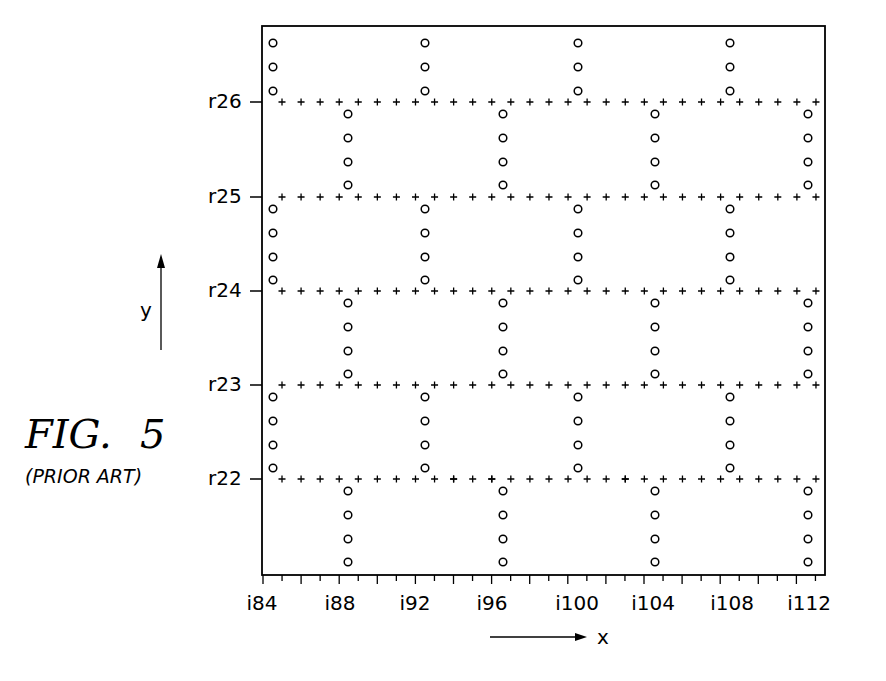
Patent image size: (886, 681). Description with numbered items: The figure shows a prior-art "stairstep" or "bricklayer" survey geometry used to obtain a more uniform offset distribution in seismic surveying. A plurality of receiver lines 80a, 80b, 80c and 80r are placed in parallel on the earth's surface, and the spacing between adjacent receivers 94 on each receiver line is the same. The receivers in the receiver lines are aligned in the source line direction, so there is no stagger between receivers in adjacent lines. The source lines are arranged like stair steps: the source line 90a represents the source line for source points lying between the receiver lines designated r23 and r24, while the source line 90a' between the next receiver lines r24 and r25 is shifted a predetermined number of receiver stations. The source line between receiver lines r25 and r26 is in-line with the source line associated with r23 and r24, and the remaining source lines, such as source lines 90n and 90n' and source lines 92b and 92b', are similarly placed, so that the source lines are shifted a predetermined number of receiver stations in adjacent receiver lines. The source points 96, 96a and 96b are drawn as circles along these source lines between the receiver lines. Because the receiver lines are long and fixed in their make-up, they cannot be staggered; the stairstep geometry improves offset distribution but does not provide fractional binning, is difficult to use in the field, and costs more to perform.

The receiver line 80r is at (758, 103).
The receiver line 80c is at (750, 289).
The receiver line 80b is at (780, 385).
The receiver line 80a is at (782, 481).
The source line 90a is at (841, 338).
The source line 90a' is at (692, 255).
The source line 90n is at (381, 338).
The source line 90n' is at (309, 255).
The source line 92b is at (622, 338).
The source line 92b' is at (541, 255).
The receiver 94 is at (452, 481).
The pixels in column i96 96 is at (509, 517).
The pixels in column i104 96a is at (662, 517).
The pixels in column i104 row band r23-r24 96b is at (660, 327).